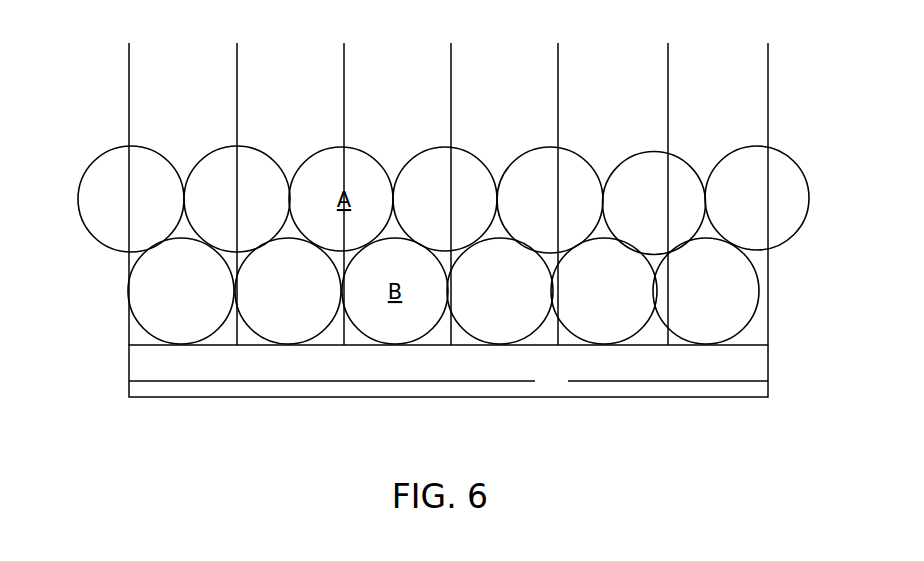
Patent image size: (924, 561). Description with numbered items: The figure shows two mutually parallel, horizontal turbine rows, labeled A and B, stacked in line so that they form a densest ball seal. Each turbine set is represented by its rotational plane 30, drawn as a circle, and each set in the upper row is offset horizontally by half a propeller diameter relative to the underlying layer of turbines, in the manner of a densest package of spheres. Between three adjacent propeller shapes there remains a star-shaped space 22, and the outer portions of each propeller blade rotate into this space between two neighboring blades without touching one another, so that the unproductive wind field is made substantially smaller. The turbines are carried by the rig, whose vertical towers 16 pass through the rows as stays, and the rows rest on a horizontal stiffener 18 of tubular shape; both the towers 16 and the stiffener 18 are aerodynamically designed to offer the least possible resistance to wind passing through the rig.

The vertical towers 16 is at (667, 78).
The horizontal stiffeners 18 is at (448, 371).
The star-shaped space 22 is at (283, 200).
The rotational plane 30 is at (118, 146).